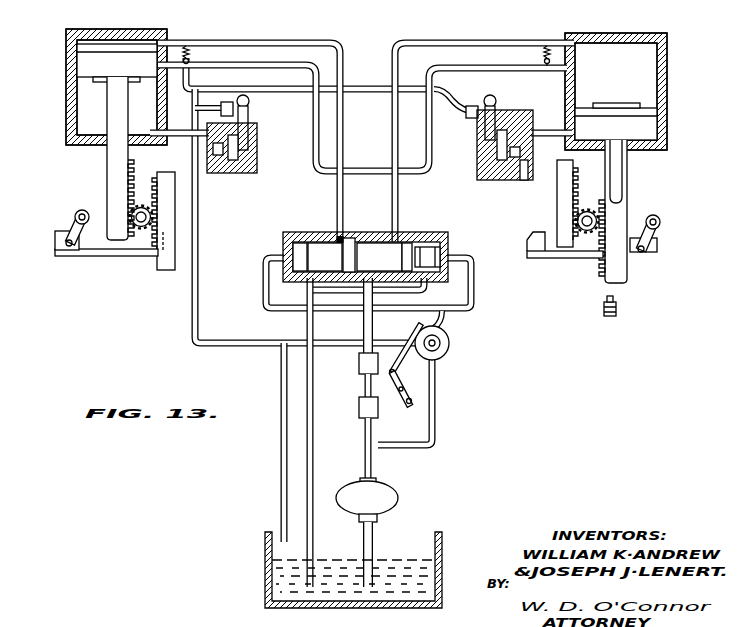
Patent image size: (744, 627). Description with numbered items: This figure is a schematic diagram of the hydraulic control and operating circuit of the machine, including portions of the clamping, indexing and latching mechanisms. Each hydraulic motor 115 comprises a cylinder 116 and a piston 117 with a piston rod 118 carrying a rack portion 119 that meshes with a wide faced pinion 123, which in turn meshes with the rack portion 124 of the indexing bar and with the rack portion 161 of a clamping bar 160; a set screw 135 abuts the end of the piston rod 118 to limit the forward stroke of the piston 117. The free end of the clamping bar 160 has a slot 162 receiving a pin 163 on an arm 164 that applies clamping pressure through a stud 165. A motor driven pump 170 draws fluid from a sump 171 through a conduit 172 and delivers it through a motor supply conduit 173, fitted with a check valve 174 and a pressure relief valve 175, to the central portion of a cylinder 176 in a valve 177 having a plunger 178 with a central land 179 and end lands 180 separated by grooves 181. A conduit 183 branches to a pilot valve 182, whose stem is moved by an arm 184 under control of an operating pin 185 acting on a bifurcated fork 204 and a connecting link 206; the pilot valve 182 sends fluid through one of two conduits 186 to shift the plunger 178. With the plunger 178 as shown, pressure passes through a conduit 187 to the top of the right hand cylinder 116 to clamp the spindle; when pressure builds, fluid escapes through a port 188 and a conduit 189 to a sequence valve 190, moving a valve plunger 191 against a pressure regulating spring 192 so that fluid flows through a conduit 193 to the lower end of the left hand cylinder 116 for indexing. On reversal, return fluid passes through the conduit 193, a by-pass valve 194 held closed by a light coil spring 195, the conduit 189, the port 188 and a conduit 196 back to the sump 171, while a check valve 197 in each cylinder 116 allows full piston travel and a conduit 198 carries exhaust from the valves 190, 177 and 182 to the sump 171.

The hydraulic motor 115 is at (62, 61).
The cylinder 116 is at (66, 125).
The piston 117 is at (68, 85).
The piston rod 118 is at (110, 136).
The rack portion 119 is at (120, 190).
The wide faced pinion 123 is at (138, 207).
The rack portion 124 is at (160, 271).
The set screw 135 is at (617, 310).
The clamping bar 160 is at (103, 257).
The rack portion 161 is at (104, 218).
The slot 162 is at (69, 254).
The pin 163 is at (68, 251).
The arm 164 is at (62, 232).
The stud 165 is at (78, 217).
The motor driven pump 170 is at (398, 498).
The sump 171 is at (438, 545).
The conduit 172 is at (365, 542).
The motor supply conduit 173 is at (366, 322).
The check valve 174 is at (360, 413).
The pressure relief valve 175 is at (360, 372).
The cylinder 176 is at (380, 234).
The valve 177 is at (415, 228).
The plunger 178 is at (427, 250).
The central land 179 is at (345, 233).
The end lands 180 is at (298, 242).
The grooves 181 is at (412, 243).
The pilot valve 182 is at (437, 358).
The conduit 183 is at (437, 437).
The arm 184 is at (430, 334).
The operating pin 185 is at (410, 410).
The conduits 186 is at (267, 285).
The conduit 187 is at (274, 43).
The port 188 is at (155, 70).
The conduit 189 is at (315, 110).
The sequence valve 190 is at (245, 173).
The valve plunger 191 is at (248, 137).
The pressure regulating spring 192 is at (253, 118).
The conduit 193 is at (177, 139).
The by-pass valve 194 is at (212, 156).
The light coil spring 195 is at (233, 170).
The conduit 196 is at (420, 292).
The check valve 197 is at (182, 62).
The conduit 198 is at (355, 85).
The bifurcated fork 204 is at (407, 387).
The connecting link 206 is at (418, 323).